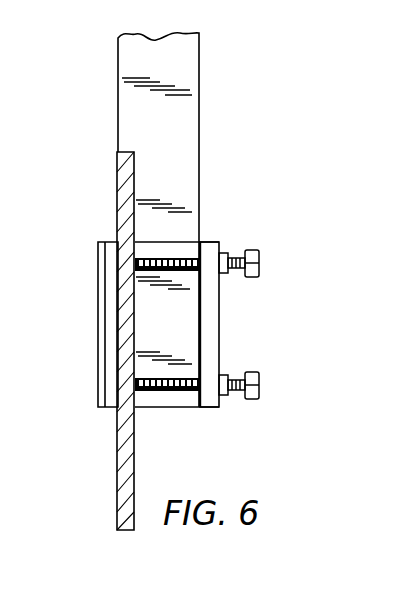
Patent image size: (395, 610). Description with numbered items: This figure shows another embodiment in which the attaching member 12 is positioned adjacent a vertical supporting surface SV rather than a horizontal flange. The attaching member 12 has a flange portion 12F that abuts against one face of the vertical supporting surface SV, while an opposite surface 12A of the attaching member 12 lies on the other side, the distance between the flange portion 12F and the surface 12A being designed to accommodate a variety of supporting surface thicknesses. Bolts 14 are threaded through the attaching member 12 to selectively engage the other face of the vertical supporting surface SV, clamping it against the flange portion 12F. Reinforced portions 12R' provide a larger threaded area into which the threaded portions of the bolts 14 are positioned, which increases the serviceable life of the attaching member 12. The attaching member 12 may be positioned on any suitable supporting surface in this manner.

The vertical supporting surface SV is at (125, 180).
The attaching member 12 is at (170, 298).
The flange portion 12F is at (98, 342).
The surface of the attaching member 12A is at (210, 344).
The reinforced portion 12R' is at (209, 324).
The bolt 14 is at (259, 257).